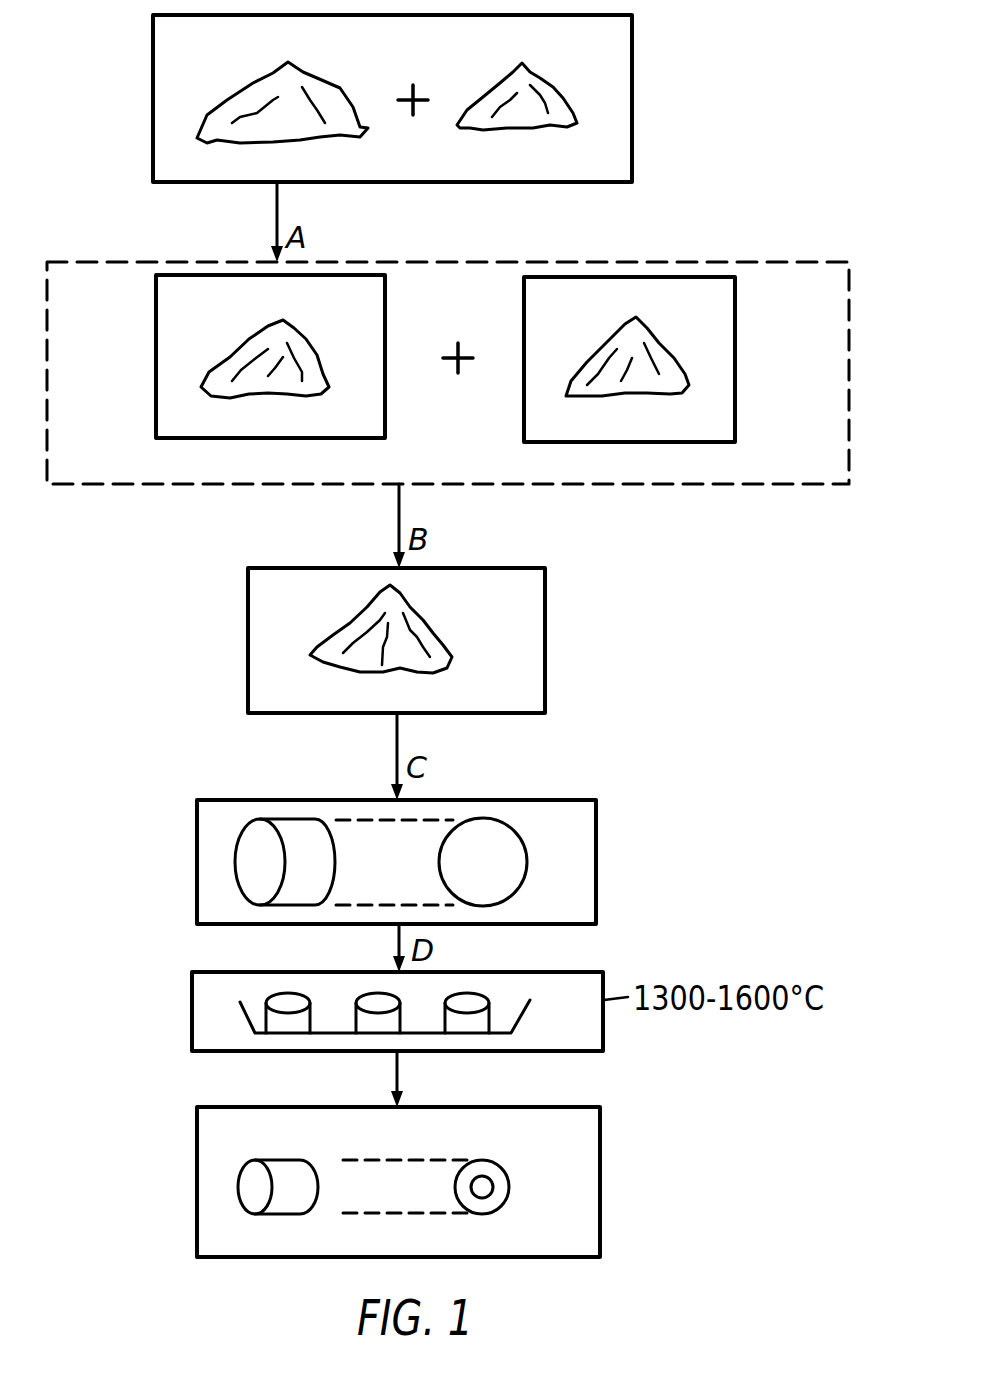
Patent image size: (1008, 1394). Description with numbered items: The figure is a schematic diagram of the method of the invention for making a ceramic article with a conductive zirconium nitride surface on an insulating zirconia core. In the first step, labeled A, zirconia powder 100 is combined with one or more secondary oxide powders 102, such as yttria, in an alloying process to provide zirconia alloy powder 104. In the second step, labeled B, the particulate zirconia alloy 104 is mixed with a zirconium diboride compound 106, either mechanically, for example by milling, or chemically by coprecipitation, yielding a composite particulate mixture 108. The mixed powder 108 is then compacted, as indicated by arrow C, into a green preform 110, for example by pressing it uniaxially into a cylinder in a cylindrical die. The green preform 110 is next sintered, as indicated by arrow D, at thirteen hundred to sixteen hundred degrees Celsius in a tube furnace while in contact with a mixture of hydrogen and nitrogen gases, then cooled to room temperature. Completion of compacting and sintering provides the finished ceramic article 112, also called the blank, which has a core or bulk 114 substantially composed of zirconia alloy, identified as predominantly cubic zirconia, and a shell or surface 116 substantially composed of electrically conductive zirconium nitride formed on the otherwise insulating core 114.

The zirconia powder 100 is at (200, 114).
The secondary oxide powders 102 is at (563, 98).
The zirconia alloy powder 104 is at (323, 376).
The zirconium diboride compound 106 is at (685, 362).
The composite particulate mixture 108 is at (452, 643).
The green preform 110 is at (597, 862).
The ceramic article 112 is at (238, 1184).
The core 114 is at (490, 1193).
The shell 116 is at (507, 1177).